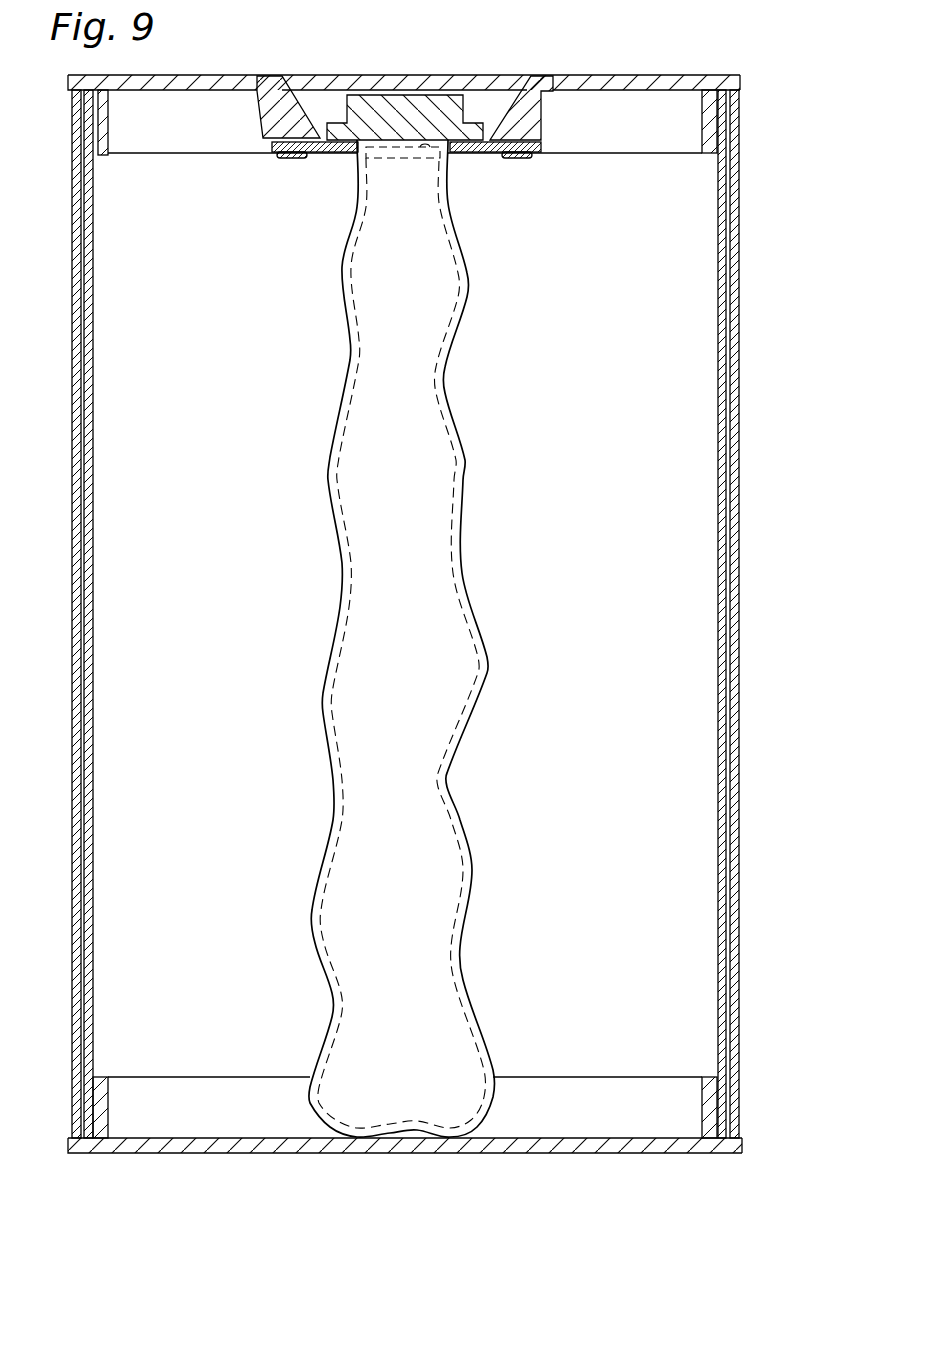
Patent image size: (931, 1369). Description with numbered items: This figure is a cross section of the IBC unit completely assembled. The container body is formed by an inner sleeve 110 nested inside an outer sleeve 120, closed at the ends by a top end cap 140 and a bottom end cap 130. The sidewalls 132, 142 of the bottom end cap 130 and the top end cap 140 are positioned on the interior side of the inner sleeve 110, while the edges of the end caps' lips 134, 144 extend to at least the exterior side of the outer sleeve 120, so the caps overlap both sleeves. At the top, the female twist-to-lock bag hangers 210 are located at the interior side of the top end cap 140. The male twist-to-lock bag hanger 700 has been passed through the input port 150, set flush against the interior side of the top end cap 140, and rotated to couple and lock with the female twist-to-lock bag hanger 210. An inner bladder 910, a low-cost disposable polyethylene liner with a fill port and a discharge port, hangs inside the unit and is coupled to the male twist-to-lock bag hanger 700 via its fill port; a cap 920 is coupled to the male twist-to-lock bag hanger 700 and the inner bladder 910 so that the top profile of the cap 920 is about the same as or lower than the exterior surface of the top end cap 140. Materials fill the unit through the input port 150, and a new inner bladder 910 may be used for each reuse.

The inner sleeve 110 is at (93, 307).
The outer sleeve 120 is at (738, 395).
The bottom end cap 130 is at (572, 1153).
The sidewall of the bottom end cap 132 is at (718, 1110).
The lip of the bottom end cap 134 is at (733, 1156).
The top end cap 140 is at (603, 75).
The sidewall of the top end cap 142 is at (705, 130).
The lip of the top end cap 144 is at (728, 73).
The input port 150 is at (321, 135).
The female twist-to-lock bag hanger 210 is at (517, 158).
The male twist-to-lock bag hanger 700 is at (552, 152).
The inner bladder 910 is at (487, 665).
The cap 920 is at (384, 93).